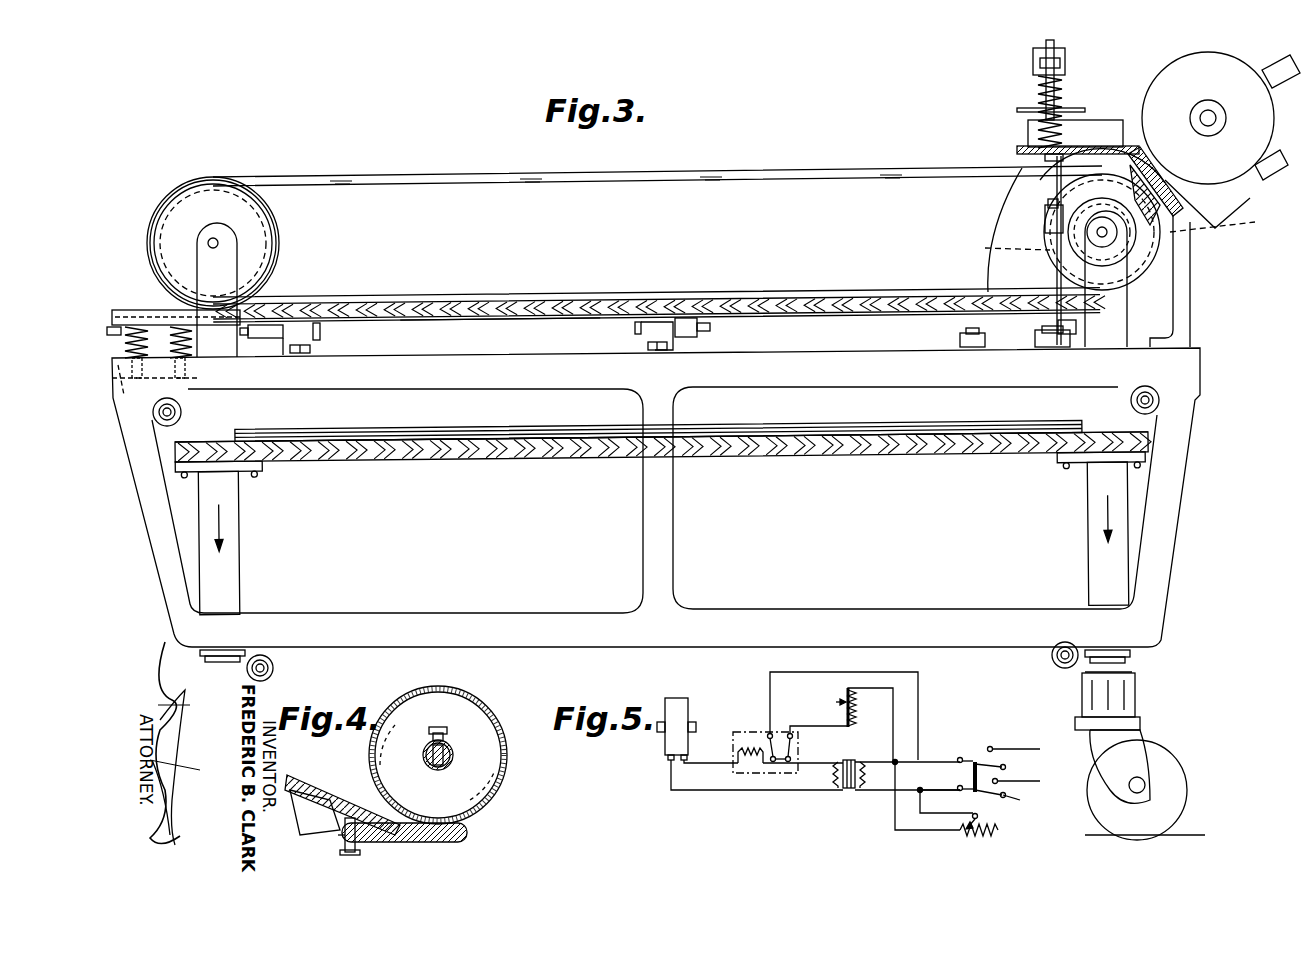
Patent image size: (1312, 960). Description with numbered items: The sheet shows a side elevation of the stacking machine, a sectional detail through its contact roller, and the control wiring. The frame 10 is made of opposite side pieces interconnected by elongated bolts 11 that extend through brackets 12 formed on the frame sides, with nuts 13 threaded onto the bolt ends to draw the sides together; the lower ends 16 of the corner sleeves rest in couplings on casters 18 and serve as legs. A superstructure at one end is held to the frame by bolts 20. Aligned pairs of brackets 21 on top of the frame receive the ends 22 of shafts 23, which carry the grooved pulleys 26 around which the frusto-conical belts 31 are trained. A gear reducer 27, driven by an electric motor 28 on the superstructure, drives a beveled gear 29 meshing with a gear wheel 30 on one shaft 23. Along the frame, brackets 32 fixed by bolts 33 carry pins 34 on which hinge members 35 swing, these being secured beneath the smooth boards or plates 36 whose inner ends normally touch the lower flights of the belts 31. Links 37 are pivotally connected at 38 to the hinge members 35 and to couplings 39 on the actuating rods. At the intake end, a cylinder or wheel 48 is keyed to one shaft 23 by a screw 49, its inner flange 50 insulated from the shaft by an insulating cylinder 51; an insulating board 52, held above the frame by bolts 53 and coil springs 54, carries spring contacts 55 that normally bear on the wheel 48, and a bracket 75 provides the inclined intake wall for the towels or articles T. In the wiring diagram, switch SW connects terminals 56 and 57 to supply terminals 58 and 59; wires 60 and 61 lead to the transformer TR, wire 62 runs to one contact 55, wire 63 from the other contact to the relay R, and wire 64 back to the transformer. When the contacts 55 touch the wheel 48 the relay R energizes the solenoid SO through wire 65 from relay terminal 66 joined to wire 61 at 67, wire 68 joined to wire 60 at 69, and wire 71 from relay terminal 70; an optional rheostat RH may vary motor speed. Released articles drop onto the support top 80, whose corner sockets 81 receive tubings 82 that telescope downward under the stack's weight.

In FIG. 3, the frame 10 is at (1205, 379).
In FIG. 3, the elongated bolts 11 is at (182, 412).
In FIG. 3, the brackets 12 is at (178, 405).
In FIG. 3, the nuts 13 is at (173, 422).
In FIG. 3, the lower ends of sleeves 16 is at (1132, 675).
In FIG. 3, the casters 18 is at (1140, 737).
In FIG. 3, the bolts 20 is at (1185, 316).
In FIG. 3, the brackets 21 is at (200, 287).
In FIG. 3, the ends of shafts 22 is at (221, 247).
In FIG. 4, the shafts 23 is at (455, 755).
In FIG. 3, the pulleys 26 is at (262, 228).
In FIG. 3, the gear reducer 27 is at (1265, 181).
In FIG. 3, the electric motor 28 is at (1160, 85).
In FIG. 3, the beveled gear 29 is at (1215, 232).
In FIG. 3, the gear wheel 30 is at (1000, 253).
In FIG. 3, the belts 31 is at (430, 297).
In FIG. 3, the brackets 32 is at (322, 333).
In FIG. 3, the bolts 33 is at (312, 349).
In FIG. 3, the pins 34 is at (711, 327).
In FIG. 3, the hinge members 35 is at (276, 340).
In FIG. 3, the boards or plates 36 is at (540, 319).
In FIG. 3, the links 37 is at (1057, 279).
In FIG. 3, the pivotal connections 38 is at (1075, 334).
In FIG. 3, the couplings 39 is at (1047, 206).
In FIG. 3, the cylinder or wheel 48 is at (280, 237).
In FIG. 4, the cylinder or wheel 48 is at (477, 705).
In FIG. 5, the cylinder or wheel 48 is at (685, 705).
In FIG. 4, the screw 49 is at (440, 728).
In FIG. 4, the inner flange 50 is at (455, 772).
In FIG. 4, the insulating cylinder 51 is at (430, 760).
In FIG. 3, the insulating board or plate 52 is at (120, 310).
In FIG. 4, the insulating board or plate 52 is at (343, 838).
In FIG. 3, the bolts 53 is at (140, 361).
In FIG. 3, the coil springs 54 is at (190, 350).
In FIG. 4, the electrical contacts 55 is at (468, 832).
In FIG. 5, the electrical contacts 55 is at (688, 760).
In FIG. 5, the terminal 56 is at (960, 757).
In FIG. 5, the terminal 57 is at (960, 791).
In FIG. 5, the terminal 58 is at (993, 747).
In FIG. 5, the terminal 59 is at (1006, 797).
In FIG. 5, the wire 60 is at (885, 762).
In FIG. 5, the wire 61 is at (878, 791).
In FIG. 5, the wire 62 is at (708, 791).
In FIG. 5, the wire 63 is at (710, 764).
In FIG. 5, the wire 64 is at (818, 762).
In FIG. 5, the wire 65 is at (828, 672).
In FIG. 5, the terminal of relay 66 is at (771, 733).
In FIG. 5, the connection point 67 is at (925, 788).
In FIG. 5, the wire 68 is at (893, 718).
In FIG. 5, the connection point 69 is at (897, 760).
In FIG. 5, the terminal of relay 70 is at (793, 736).
In FIG. 5, the wire 71 is at (812, 726).
In FIG. 4, the bracket 75 is at (300, 816).
In FIG. 3, the top of support 80 is at (550, 462).
In FIG. 3, the sockets 81 is at (250, 476).
In FIG. 3, the pipes or tubings 82 is at (238, 556).
In FIG. 3, the towels or articles T is at (538, 428).
In FIG. 4, the towels or articles T is at (330, 790).
In FIG. 3, the transformer TR is at (1075, 133).
In FIG. 5, the transformer TR is at (849, 797).
In FIG. 5, the relay R is at (749, 738).
In FIG. 5, the solenoid SO is at (823, 704).
In FIG. 5, the switch SW is at (976, 760).
In FIG. 5, the rheostat RH is at (1002, 833).